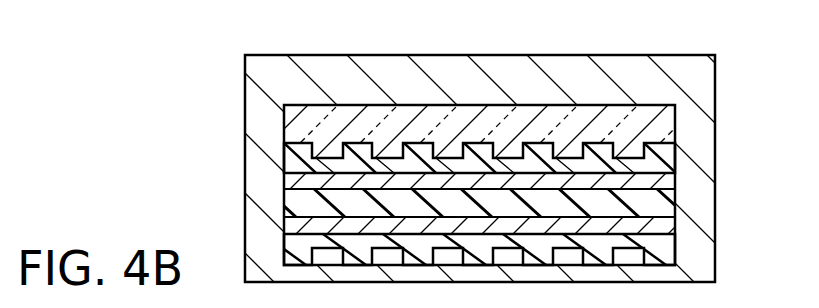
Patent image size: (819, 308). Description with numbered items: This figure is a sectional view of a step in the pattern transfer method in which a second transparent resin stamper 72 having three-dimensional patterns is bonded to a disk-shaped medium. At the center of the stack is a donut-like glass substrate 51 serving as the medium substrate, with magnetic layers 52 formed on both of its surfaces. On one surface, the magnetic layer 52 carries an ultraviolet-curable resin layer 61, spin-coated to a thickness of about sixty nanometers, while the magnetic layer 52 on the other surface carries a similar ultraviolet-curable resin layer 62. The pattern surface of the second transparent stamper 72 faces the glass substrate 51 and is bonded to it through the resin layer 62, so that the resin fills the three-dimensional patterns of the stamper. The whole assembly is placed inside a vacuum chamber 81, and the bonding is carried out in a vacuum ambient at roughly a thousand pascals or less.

The vacuum chamber 81 is at (657, 62).
The second transparent resin stamper 72 is at (660, 118).
The 2P resin layer 62 is at (675, 158).
The magnetic layer 52 is at (662, 183).
The glass substrate 51 is at (675, 201).
The 2P resin layer 61 is at (675, 248).